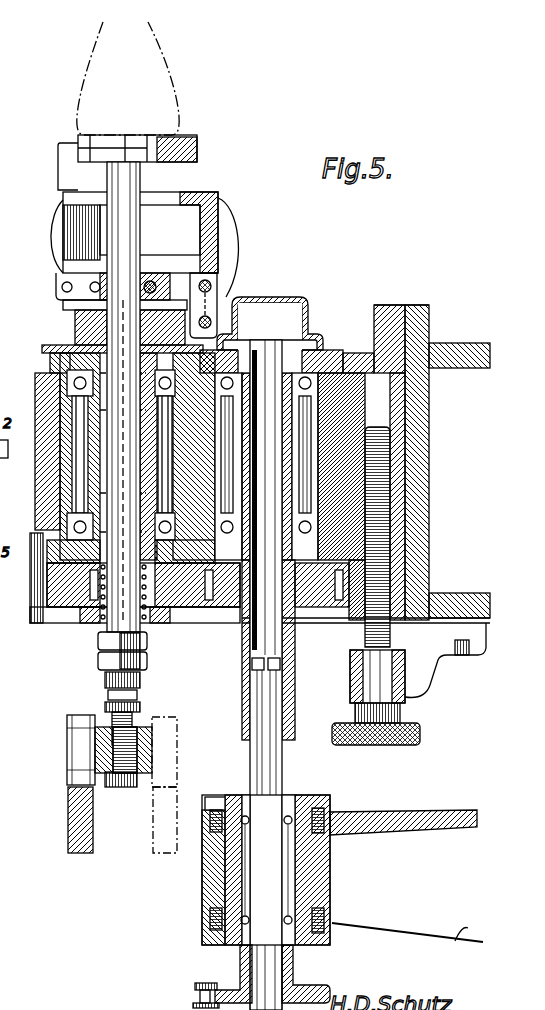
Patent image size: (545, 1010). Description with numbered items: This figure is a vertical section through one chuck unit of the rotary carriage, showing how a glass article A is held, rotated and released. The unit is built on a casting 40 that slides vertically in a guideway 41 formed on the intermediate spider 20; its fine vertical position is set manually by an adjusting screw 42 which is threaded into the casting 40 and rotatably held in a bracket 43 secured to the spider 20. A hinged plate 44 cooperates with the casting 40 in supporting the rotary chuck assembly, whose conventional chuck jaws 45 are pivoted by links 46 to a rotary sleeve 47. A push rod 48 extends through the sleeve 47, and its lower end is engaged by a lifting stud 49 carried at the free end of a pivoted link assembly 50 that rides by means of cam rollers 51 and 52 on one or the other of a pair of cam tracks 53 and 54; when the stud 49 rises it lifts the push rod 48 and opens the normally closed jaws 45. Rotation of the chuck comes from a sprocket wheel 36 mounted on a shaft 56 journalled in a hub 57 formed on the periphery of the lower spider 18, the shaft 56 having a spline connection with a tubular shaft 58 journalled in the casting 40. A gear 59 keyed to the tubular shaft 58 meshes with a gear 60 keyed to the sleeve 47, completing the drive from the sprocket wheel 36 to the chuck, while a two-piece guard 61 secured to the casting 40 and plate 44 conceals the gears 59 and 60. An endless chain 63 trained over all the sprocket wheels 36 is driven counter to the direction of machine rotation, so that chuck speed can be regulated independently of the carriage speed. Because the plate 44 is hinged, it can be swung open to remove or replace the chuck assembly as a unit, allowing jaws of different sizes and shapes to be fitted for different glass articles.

The conical nose piece A is at (178, 107).
The chuck jaws 45 is at (220, 207).
The links 46 is at (220, 297).
The rotary sleeve 47 is at (72, 345).
The hinged plate 44 is at (40, 403).
The push rod 48 is at (118, 620).
The gear 60 is at (186, 600).
The guard 61 is at (37, 624).
The gear 59 is at (324, 620).
The casting 40 is at (372, 330).
The guideway 41 is at (405, 330).
The intermediate spider 20 is at (432, 461).
The bracket 43 is at (462, 668).
The adjusting screw 42 is at (420, 739).
The tubular shaft 58 is at (293, 707).
The shaft 56 is at (283, 787).
The hub 57 is at (333, 812).
The lower spider 18 is at (407, 942).
The sprocket wheel 36 is at (308, 986).
The endless chain 63 is at (198, 986).
The cam roller 51 is at (80, 722).
The cam track 53 is at (80, 850).
The pivoted link assembly 50 is at (140, 735).
The lifting stud 49 is at (116, 776).
The cam roller 52 is at (178, 722).
The cam track 54 is at (162, 853).